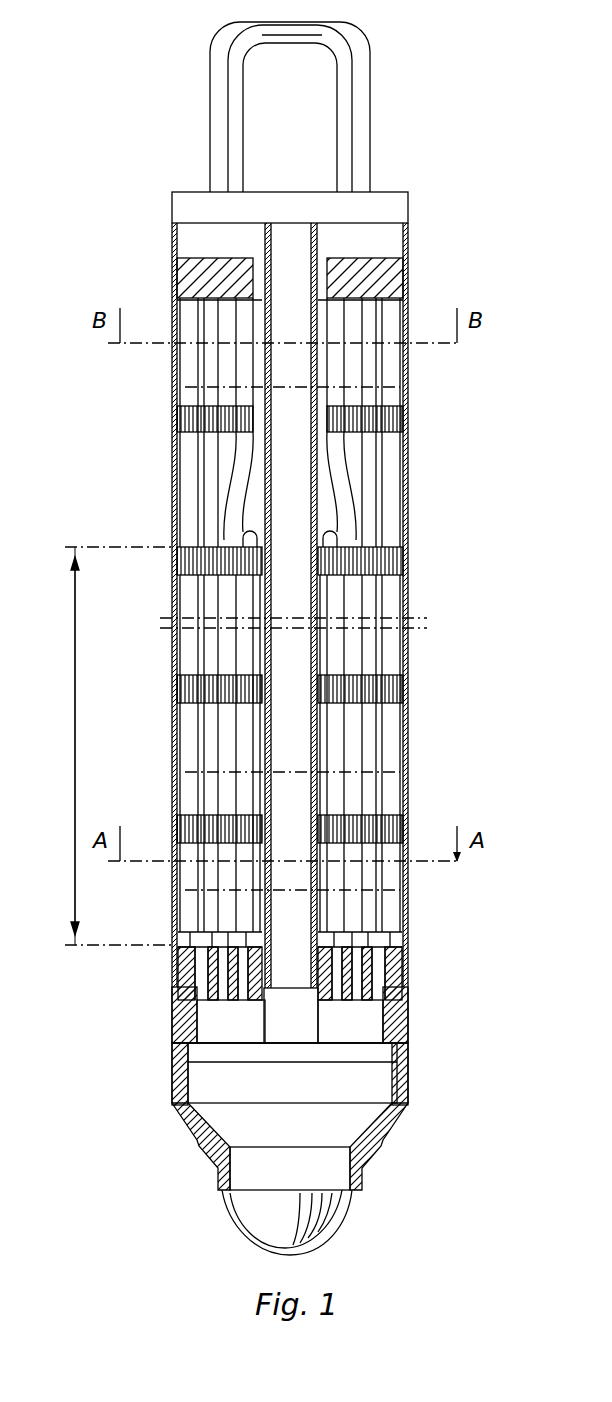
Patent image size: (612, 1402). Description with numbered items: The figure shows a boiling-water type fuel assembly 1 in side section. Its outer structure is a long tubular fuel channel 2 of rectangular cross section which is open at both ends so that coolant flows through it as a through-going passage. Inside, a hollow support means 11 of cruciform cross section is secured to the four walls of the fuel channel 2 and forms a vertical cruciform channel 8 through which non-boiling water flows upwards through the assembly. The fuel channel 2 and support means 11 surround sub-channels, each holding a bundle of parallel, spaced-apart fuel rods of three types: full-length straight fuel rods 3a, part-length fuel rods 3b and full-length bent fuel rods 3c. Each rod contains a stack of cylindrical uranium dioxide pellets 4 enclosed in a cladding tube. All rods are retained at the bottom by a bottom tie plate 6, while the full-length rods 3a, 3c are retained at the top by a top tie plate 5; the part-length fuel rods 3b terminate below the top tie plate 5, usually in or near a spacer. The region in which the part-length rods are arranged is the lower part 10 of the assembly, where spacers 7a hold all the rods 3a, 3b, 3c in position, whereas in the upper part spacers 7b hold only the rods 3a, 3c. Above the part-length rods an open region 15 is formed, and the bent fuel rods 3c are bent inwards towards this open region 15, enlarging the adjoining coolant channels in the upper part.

The fuel assembly 1 is at (428, 580).
The fuel channel 2 is at (408, 752).
The full-length straight fuel rods 3a is at (188, 475).
The part-length fuel rods 3b is at (330, 742).
The full-length bent fuel rods 3c is at (232, 532).
The pellets 4 is at (195, 920).
The top tie plate 5 is at (185, 285).
The bottom tie plate 6 is at (180, 970).
The spacers 7a is at (180, 828).
The spacers 7b is at (188, 418).
The cruciform channel 8 is at (280, 250).
The lower part 10 is at (75, 748).
The support means 11 is at (317, 243).
The open region 15 is at (328, 517).